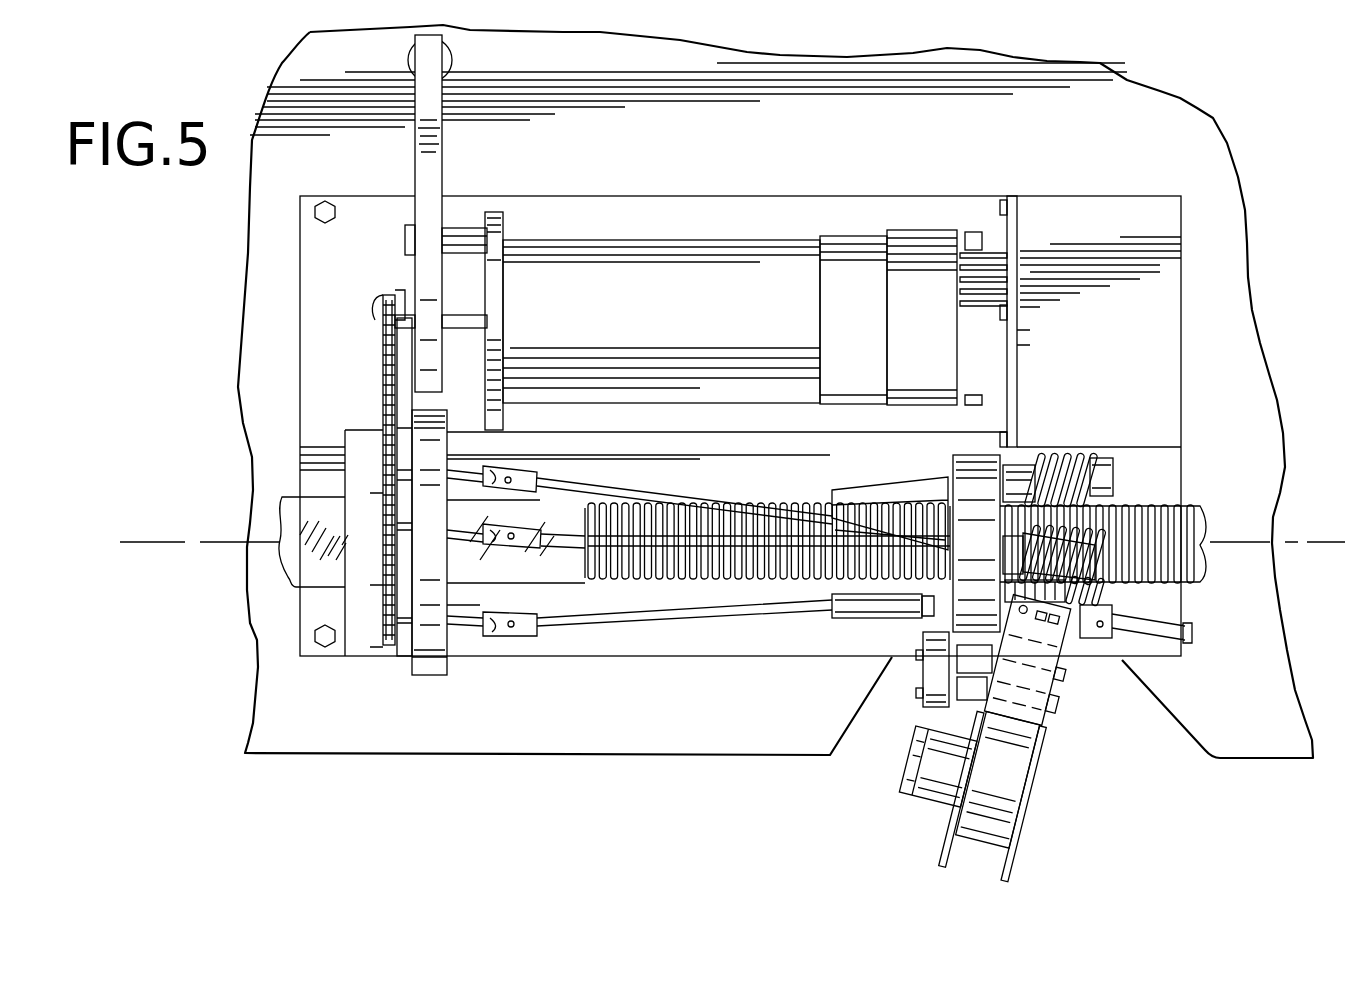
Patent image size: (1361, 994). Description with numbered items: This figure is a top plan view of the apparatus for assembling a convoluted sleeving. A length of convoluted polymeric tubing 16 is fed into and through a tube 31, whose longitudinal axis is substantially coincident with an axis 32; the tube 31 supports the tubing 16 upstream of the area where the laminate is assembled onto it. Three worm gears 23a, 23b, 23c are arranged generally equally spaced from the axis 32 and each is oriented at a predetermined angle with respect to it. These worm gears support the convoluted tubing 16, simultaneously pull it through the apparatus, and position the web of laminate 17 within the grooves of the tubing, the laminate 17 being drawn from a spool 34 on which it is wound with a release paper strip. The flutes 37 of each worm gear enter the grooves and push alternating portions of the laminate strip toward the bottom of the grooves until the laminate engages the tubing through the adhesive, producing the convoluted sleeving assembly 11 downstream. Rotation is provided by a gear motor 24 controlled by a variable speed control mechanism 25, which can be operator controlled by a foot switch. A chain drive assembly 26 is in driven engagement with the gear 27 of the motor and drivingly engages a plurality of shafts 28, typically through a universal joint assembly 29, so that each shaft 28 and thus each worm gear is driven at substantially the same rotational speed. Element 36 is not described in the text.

The convoluted sleeving assembly 11 is at (1193, 503).
The convoluted polymeric tubing 16 is at (590, 560).
The web of laminate 17 is at (1012, 770).
The worm gear 23a is at (1105, 556).
The worm gear 23b is at (1108, 476).
The worm gear 23c is at (1108, 603).
The gear motor 24 is at (700, 323).
The variable speed control mechanism 25 is at (1106, 375).
The chain drive assembly 26 is at (383, 388).
The gear 27 is at (400, 300).
The shafts 28 is at (570, 500).
The universal joint assembly 29 is at (512, 530).
The tube 31 is at (292, 584).
The axis 32 is at (1324, 517).
The spool 34 is at (1017, 846).
The block 36 is at (1070, 625).
The flutes 37 is at (1077, 470).